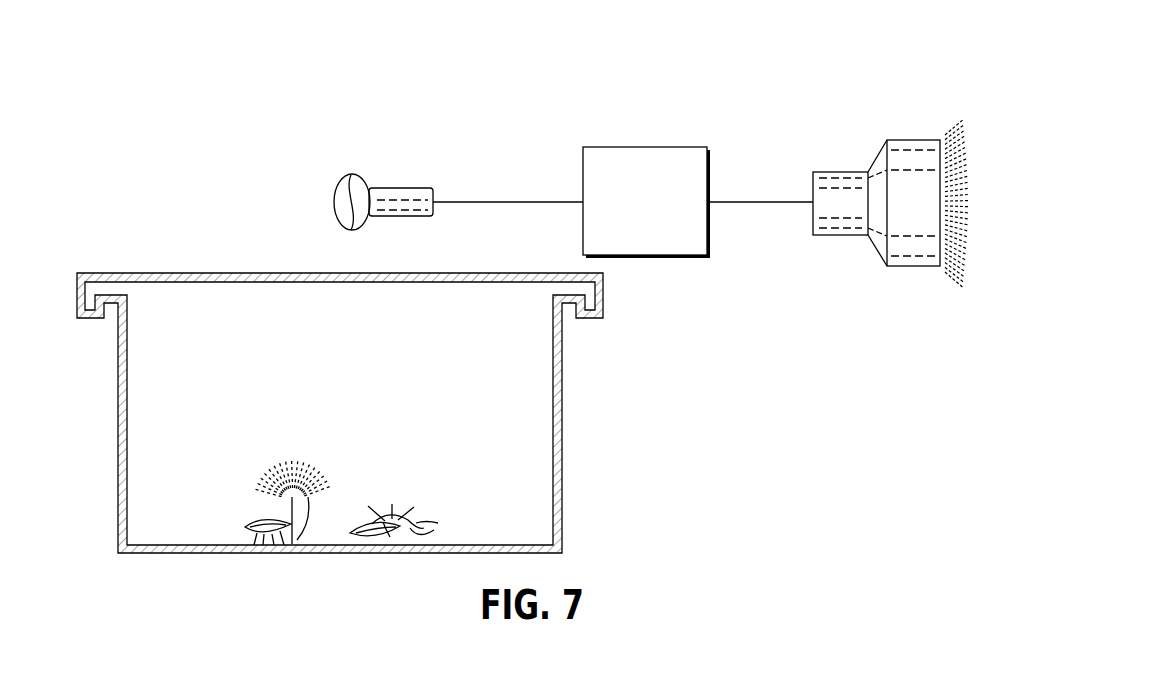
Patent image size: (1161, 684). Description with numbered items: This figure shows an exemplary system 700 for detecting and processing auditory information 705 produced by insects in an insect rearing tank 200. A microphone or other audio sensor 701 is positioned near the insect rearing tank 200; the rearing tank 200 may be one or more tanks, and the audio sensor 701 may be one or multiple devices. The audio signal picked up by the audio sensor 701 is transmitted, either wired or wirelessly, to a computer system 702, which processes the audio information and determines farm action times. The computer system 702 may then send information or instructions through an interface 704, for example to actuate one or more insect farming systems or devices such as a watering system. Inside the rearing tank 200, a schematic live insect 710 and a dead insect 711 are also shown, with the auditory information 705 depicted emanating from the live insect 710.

The system 700 is at (238, 180).
The insect rearing tank 200 is at (118, 549).
The microphone or other audio sensor 701 is at (395, 188).
The computer system 702 is at (660, 258).
The interface 704 is at (890, 268).
The auditory information 705 is at (283, 463).
The live insect 710 is at (273, 553).
The dead insect 711 is at (385, 553).